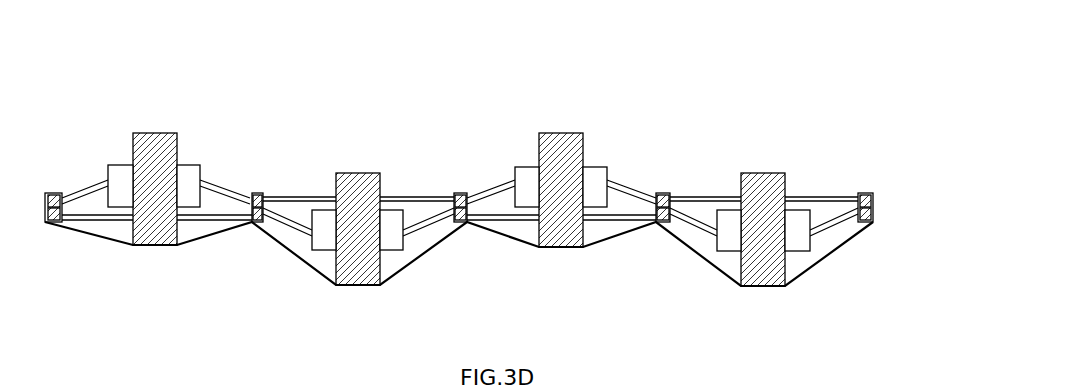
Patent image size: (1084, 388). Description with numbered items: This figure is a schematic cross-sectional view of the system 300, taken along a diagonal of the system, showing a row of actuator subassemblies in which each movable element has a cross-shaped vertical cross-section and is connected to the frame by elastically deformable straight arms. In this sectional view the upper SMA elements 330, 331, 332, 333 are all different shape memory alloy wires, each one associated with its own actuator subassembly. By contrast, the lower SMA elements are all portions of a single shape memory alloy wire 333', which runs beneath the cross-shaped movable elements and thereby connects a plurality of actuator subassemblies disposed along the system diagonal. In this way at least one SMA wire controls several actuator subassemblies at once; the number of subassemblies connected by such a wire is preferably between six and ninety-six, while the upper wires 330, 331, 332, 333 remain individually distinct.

The system 300 is at (860, 97).
The SMA element 330 is at (155, 133).
The SMA element 331 is at (358, 173).
The SMA element 332 is at (560, 133).
The SMA element 333 is at (763, 200).
The shape memory alloy wire 333' is at (459, 281).